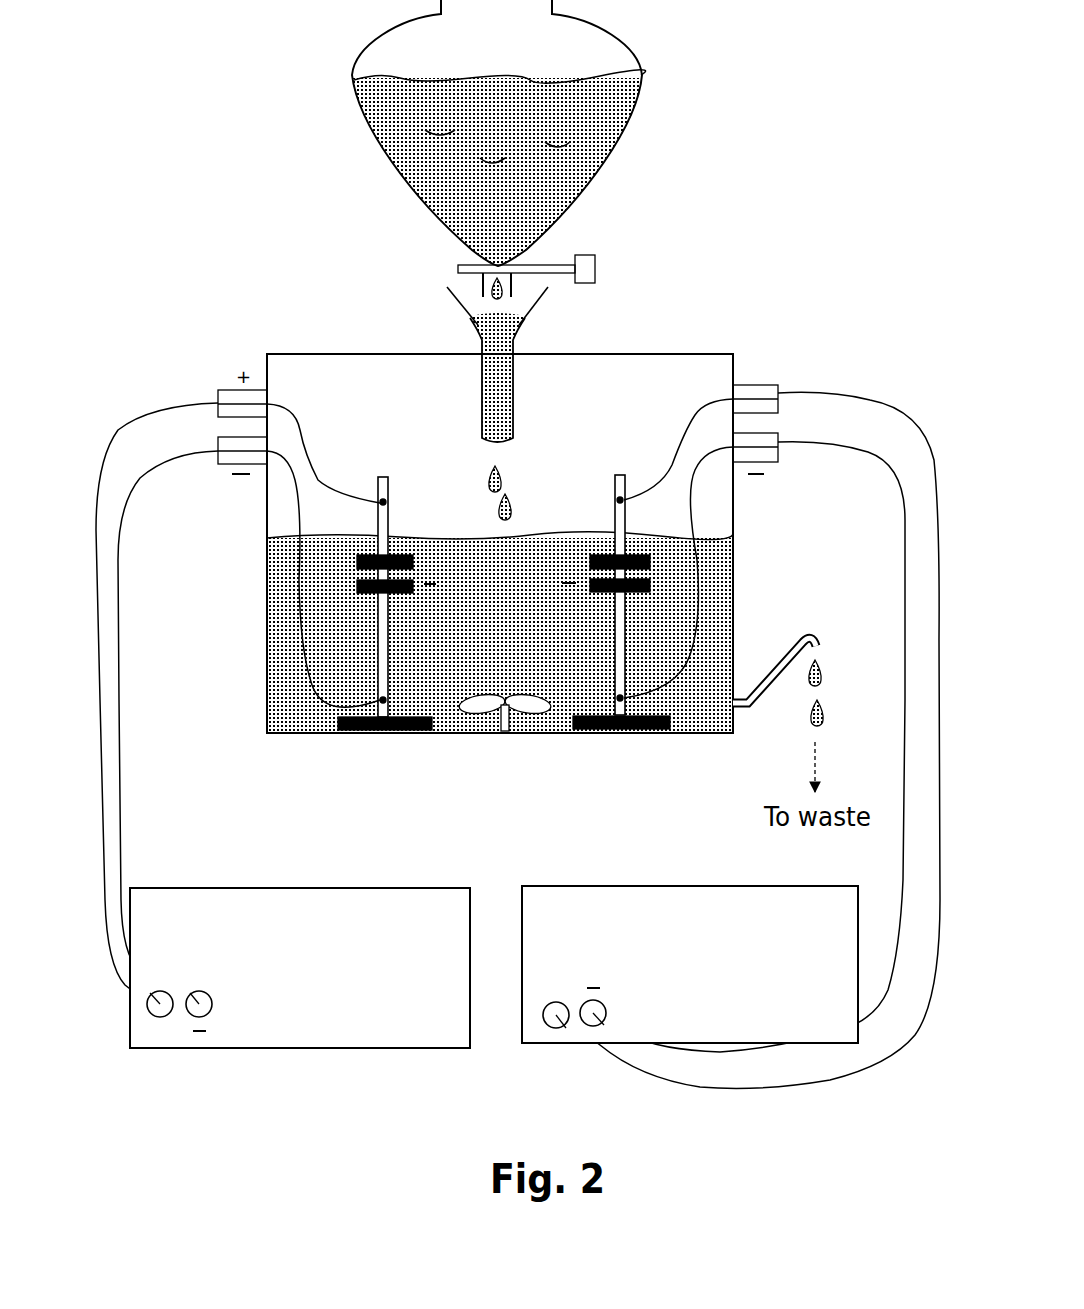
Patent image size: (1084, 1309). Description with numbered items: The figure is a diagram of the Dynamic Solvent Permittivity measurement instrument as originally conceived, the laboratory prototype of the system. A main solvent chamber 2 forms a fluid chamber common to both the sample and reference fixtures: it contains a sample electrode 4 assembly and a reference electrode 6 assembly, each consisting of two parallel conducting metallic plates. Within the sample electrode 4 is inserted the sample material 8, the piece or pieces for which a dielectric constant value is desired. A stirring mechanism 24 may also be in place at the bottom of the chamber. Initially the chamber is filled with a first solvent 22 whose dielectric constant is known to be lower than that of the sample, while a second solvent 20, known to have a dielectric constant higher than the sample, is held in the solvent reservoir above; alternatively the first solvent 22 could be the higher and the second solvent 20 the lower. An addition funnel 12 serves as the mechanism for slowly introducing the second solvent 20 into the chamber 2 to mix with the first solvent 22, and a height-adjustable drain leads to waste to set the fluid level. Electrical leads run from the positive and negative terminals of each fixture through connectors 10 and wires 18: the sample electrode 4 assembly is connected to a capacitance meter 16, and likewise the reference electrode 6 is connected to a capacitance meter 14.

The main solvent chamber 2 is at (668, 336).
The sample electrode 4 is at (632, 630).
The reference electrode 6 is at (374, 624).
The sample material 8 is at (656, 572).
The electrical connectors 10 is at (782, 378).
The addition funnel 12 is at (650, 68).
The capacitance meter 14 is at (264, 886).
The capacitance meter 16 is at (621, 880).
The wires 18 is at (874, 396).
The second solvent 20 is at (548, 168).
The solvent 22 is at (483, 566).
The stirring mechanism 24 is at (511, 716).